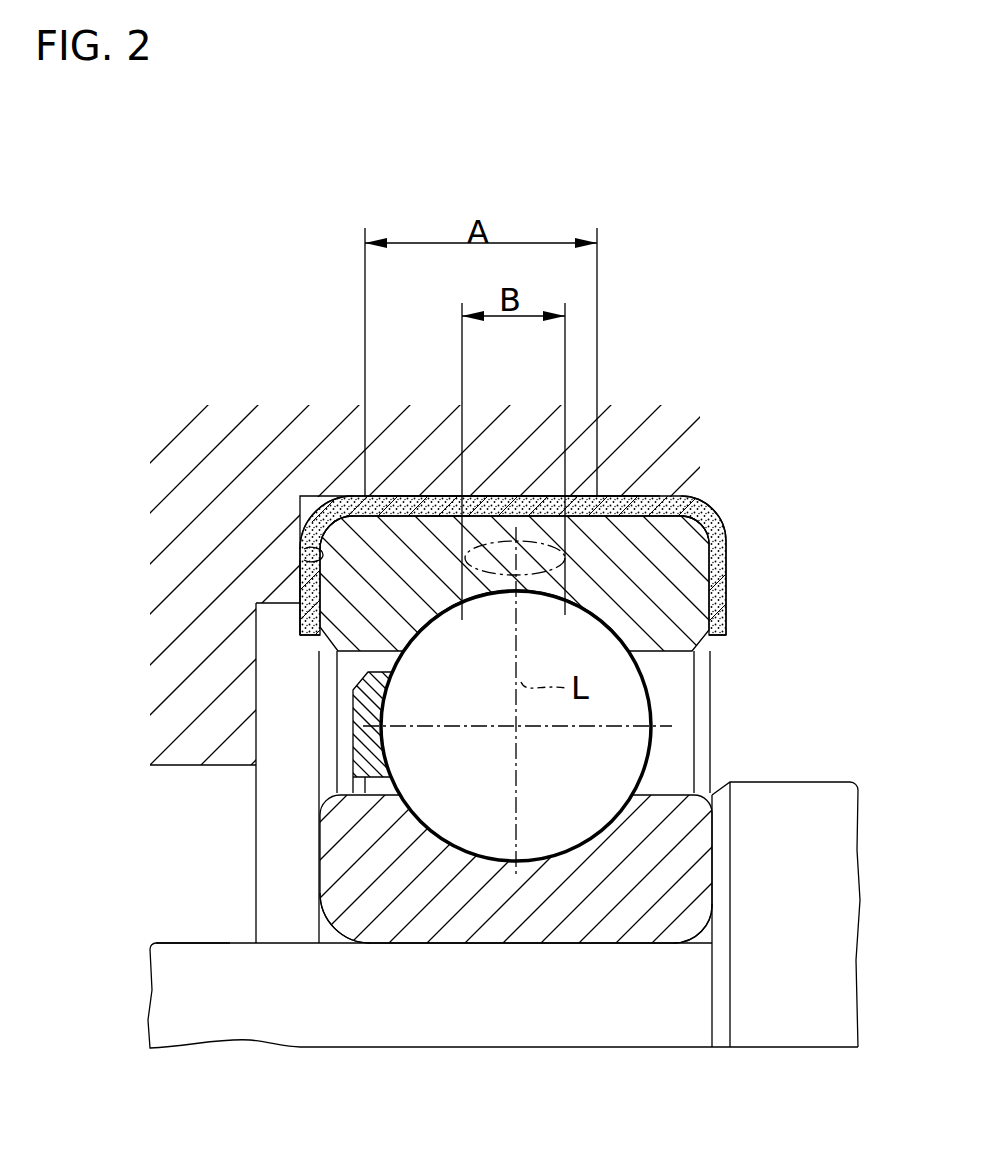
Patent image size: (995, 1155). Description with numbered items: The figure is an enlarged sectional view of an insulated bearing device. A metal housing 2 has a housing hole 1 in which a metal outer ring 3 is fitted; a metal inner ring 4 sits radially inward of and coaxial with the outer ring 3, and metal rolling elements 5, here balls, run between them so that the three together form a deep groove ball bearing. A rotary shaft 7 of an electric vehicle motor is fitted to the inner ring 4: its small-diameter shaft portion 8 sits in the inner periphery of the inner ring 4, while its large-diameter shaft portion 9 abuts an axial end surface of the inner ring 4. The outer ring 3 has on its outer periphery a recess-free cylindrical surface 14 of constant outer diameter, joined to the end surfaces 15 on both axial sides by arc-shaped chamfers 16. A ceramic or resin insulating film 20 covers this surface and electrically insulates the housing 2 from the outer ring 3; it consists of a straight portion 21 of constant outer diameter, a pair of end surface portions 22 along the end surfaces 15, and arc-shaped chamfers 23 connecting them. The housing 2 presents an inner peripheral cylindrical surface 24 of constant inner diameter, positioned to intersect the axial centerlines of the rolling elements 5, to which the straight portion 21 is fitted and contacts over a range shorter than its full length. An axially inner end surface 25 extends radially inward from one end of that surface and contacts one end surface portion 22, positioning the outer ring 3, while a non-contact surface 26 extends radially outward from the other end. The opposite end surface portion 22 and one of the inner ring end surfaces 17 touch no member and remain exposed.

The housing hole 1 is at (412, 515).
The housing 2 is at (163, 432).
The outer ring 3 is at (353, 623).
The inner ring 4 is at (497, 925).
The rolling elements 5 is at (553, 832).
The rotary shaft 7 is at (184, 942).
The small-diameter shaft portion 8 is at (405, 1005).
The large-diameter shaft portion 9 is at (790, 1018).
The cylindrical surface 14 is at (495, 540).
The end surfaces 15 is at (302, 612).
The chamfers 16 is at (326, 520).
The end surfaces 17 is at (322, 883).
The insulating film 20 is at (651, 496).
The straight portion 21 is at (543, 496).
The end surface portions 22 is at (300, 590).
The chamfers 23 is at (308, 528).
The inner peripheral cylindrical surface 24 is at (446, 518).
The axially inner end surface 25 is at (303, 551).
The non-contact surface 26 is at (601, 455).